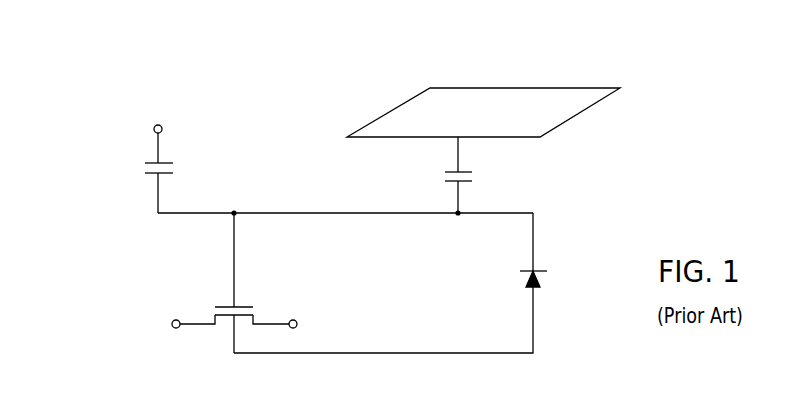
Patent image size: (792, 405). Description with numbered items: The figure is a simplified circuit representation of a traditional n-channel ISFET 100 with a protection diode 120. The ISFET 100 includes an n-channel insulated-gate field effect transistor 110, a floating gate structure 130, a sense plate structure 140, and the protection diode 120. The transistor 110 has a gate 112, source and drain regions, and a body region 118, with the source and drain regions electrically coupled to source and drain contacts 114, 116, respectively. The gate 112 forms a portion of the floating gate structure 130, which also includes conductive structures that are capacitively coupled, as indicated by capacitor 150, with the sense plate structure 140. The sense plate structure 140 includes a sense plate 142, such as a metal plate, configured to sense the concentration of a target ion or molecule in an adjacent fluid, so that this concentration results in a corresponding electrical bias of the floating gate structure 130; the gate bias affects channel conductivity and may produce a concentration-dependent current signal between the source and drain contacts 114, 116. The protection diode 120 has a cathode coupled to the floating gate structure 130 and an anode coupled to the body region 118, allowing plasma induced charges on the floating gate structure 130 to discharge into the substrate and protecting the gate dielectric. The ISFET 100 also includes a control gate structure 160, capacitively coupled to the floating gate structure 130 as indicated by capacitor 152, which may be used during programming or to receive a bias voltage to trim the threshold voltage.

The n-channel ISFET 100 is at (90, 69).
The insulated-gate field effect transistor 110 is at (255, 371).
The gate 112 is at (243, 307).
The source contact 114 is at (173, 330).
The drain contact 116 is at (297, 320).
The body region 118 is at (230, 325).
The protection diode 120 is at (552, 281).
The floating gate structure 130 is at (190, 269).
The sense plate structure 140 is at (620, 70).
The sense plate 142 is at (417, 110).
The capacitor 150 is at (480, 177).
The capacitor 152 is at (141, 166).
The control gate structure 160 is at (189, 140).